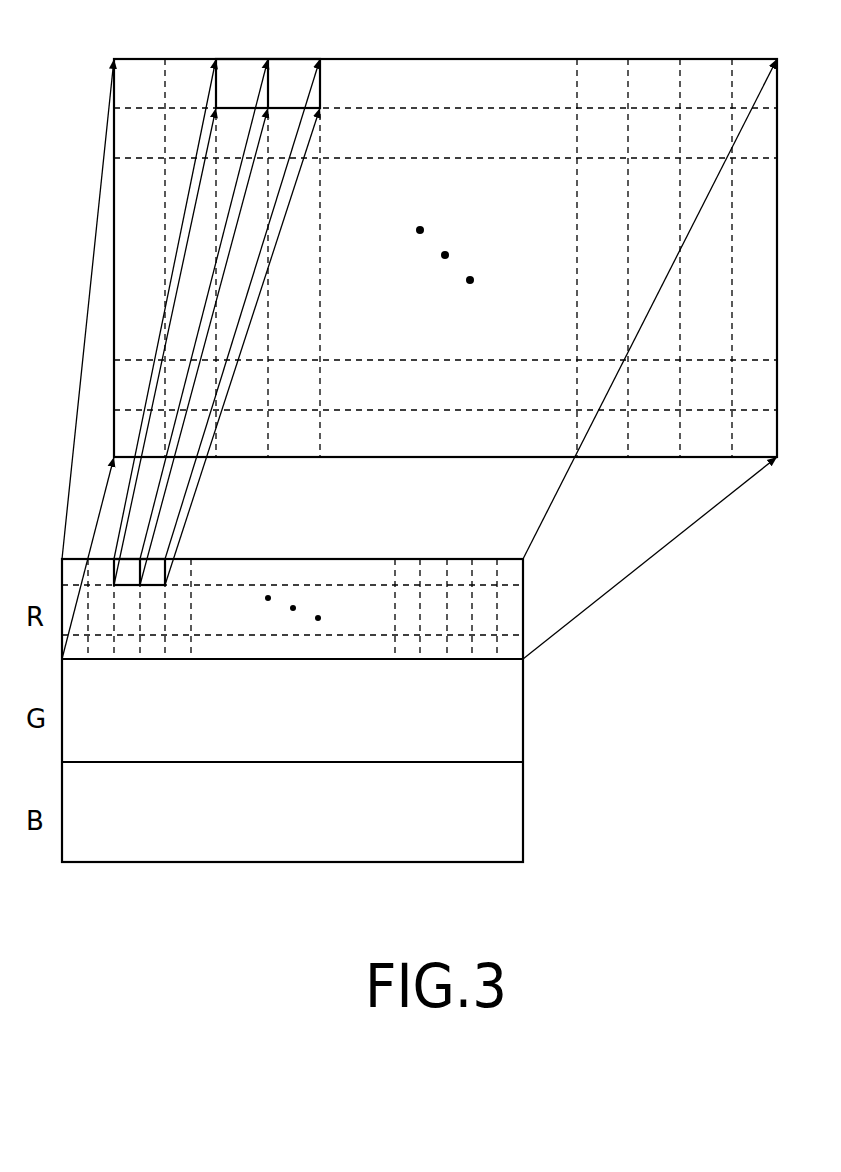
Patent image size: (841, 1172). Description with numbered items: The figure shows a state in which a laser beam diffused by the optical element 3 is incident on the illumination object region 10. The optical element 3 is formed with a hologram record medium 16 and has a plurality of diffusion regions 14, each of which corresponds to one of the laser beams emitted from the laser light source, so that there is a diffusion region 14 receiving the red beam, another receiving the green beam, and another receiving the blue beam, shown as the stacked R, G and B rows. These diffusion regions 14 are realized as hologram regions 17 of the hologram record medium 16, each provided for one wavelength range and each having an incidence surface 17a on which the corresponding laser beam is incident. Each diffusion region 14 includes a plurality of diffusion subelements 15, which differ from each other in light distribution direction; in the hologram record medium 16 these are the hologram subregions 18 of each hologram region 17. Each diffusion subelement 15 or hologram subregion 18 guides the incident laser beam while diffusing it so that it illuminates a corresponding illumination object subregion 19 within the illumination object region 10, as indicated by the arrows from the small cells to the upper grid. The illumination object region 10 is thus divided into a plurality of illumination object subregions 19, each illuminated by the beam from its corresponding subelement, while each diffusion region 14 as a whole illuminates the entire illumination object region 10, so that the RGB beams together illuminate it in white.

The illumination object region 10 is at (435, 460).
The illumination object subregion 19 is at (284, 72).
The optical element 3 is at (351, 708).
The hologram record medium 16 is at (351, 708).
The diffusion region 14 is at (351, 690).
The hologram region 17 is at (523, 598).
The incidence surface 17a is at (333, 568).
The diffusion subelement 15 is at (219, 548).
The hologram subregion 18 is at (190, 568).